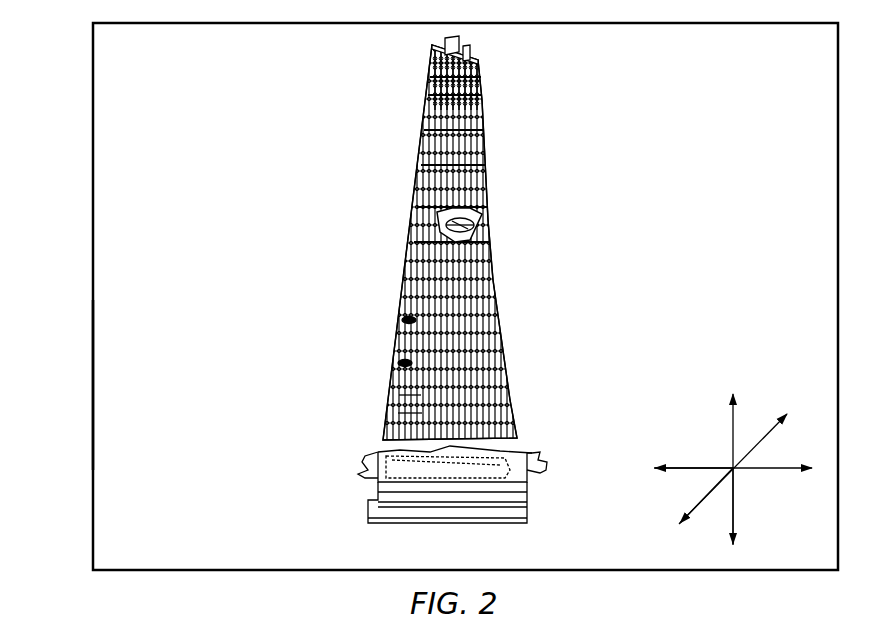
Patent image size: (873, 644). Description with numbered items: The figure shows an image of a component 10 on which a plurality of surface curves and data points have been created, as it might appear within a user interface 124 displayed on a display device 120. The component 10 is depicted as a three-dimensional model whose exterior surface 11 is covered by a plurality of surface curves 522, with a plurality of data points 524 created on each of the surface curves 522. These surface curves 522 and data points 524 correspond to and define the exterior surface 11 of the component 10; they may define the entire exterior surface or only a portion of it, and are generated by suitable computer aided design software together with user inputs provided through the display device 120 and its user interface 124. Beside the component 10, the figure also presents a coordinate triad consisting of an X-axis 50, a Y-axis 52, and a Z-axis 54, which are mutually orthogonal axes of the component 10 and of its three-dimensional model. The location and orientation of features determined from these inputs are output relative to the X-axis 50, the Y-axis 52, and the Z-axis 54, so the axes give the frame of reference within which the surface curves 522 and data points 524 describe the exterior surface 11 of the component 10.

The component 10 is at (462, 279).
The exterior surface 11 is at (424, 243).
The X-axis 50 is at (748, 470).
The Y-axis 52 is at (760, 448).
The Z-axis 54 is at (732, 434).
The display device 120 is at (64, 218).
The user interface 124 is at (92, 395).
The surface curves 522 is at (407, 320).
The data points 524 is at (420, 408).